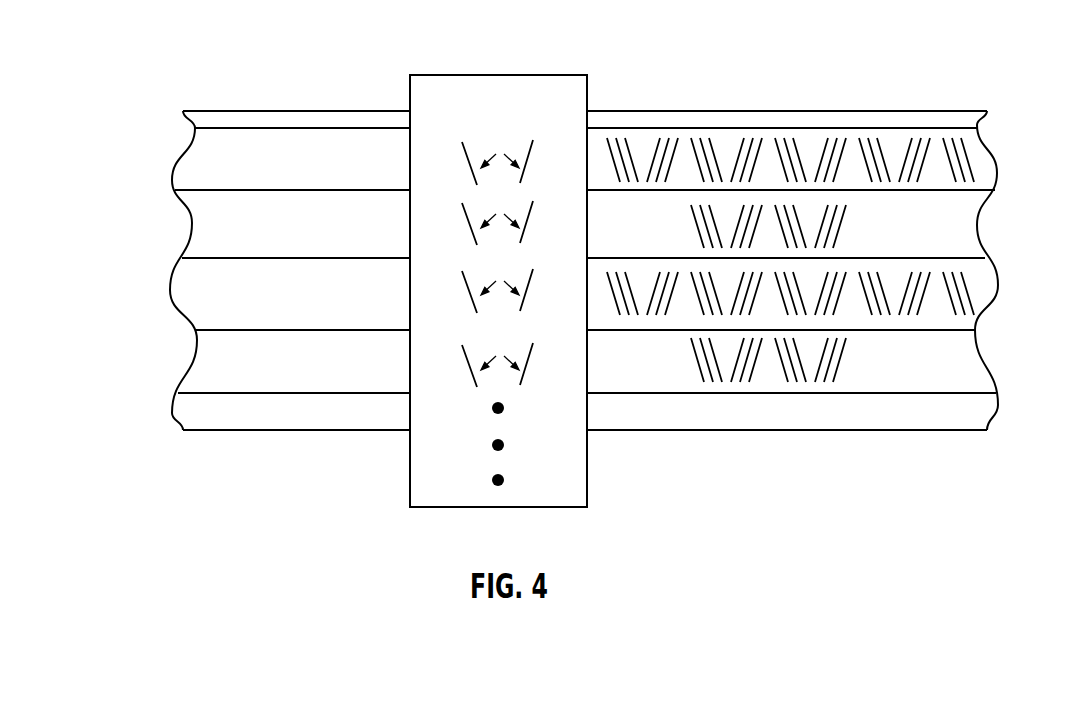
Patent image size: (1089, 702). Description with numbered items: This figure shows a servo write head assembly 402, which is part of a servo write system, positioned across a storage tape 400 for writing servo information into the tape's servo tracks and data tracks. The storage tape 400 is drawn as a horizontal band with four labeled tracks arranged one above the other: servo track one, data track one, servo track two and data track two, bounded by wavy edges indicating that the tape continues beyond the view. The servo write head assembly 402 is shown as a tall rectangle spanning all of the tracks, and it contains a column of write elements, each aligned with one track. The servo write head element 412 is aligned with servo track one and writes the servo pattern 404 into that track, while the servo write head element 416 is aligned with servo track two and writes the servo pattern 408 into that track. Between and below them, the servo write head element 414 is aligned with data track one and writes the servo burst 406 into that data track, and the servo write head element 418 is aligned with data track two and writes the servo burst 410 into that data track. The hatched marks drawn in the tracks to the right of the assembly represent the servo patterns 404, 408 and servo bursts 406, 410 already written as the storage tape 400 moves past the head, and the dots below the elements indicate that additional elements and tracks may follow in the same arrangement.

The storage tape 400 is at (637, 111).
The servo write head assembly 402 is at (498, 75).
The servo pattern 404 is at (984, 166).
The servo burst 406 is at (967, 229).
The servo pattern 408 is at (985, 298).
The servo burst 410 is at (967, 366).
The servo write head element 412 is at (497, 156).
The servo write head element 414 is at (497, 216).
The servo write head element 416 is at (497, 284).
The servo write head element 418 is at (497, 358).